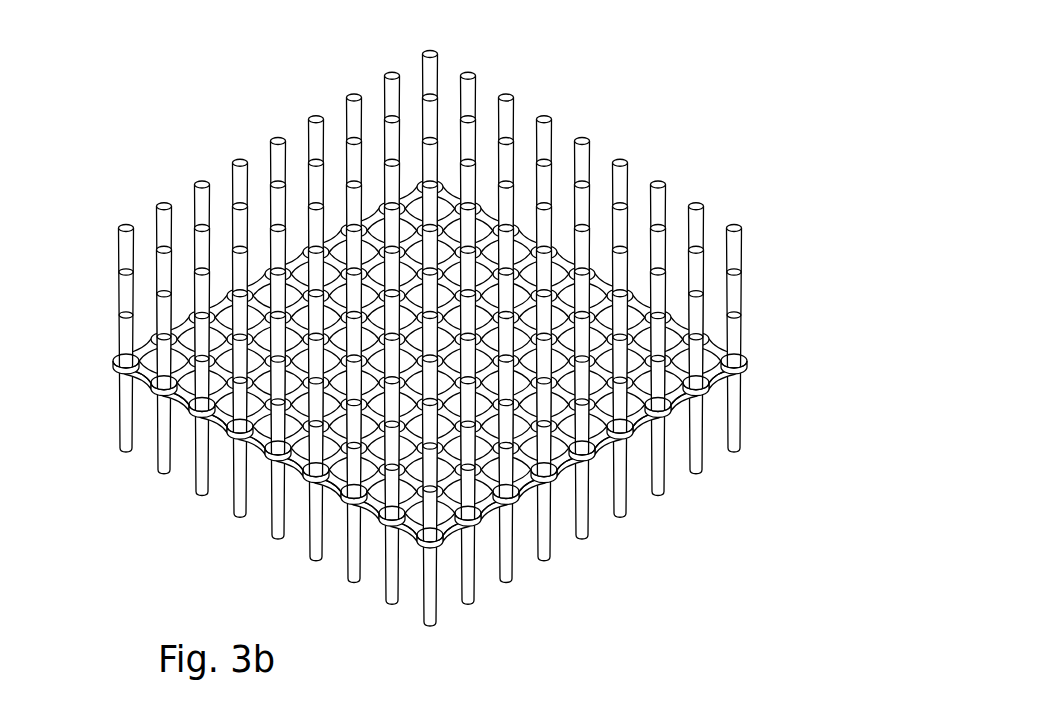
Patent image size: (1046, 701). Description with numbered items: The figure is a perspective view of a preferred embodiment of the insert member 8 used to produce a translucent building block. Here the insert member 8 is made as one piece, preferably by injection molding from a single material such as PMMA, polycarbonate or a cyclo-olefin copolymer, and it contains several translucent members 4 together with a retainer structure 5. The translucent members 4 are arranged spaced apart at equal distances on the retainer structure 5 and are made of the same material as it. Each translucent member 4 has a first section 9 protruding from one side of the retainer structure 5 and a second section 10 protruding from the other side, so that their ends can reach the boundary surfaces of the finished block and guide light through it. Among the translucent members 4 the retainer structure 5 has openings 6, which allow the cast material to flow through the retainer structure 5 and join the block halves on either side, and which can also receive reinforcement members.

The insert member 8 is at (229, 109).
The translucent members 4 is at (543, 128).
The first section 9 is at (663, 200).
The retainer structure 5 is at (750, 344).
The second section 10 is at (742, 415).
The openings 6 is at (567, 458).